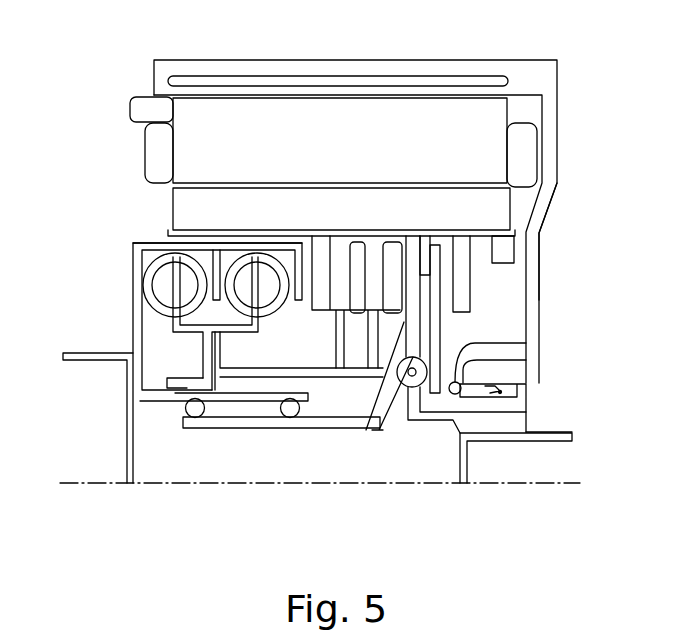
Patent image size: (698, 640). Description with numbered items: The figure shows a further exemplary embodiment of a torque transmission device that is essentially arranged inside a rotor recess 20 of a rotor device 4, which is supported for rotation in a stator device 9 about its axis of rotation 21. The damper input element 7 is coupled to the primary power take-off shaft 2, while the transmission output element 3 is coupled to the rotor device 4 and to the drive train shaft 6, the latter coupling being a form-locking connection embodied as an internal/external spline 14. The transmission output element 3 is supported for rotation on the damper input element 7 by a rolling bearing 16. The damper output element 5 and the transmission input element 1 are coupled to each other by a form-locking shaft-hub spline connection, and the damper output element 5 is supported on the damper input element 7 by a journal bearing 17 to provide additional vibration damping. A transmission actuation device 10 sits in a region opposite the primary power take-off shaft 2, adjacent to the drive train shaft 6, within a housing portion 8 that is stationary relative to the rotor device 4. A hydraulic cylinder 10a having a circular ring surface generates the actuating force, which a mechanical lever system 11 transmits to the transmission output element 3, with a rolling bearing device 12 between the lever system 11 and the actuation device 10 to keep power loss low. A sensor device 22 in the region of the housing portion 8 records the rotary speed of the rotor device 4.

The transmission input element 1 is at (373, 413).
The primary power take-off shaft 2 is at (90, 361).
The transmission output element 3 is at (539, 233).
The rotor device 4 is at (173, 202).
The damper output element 5 is at (322, 378).
The drive train shaft 6 is at (562, 443).
The damper input element 7 is at (142, 243).
The housing portion 8 is at (558, 117).
The stator device 9 is at (486, 108).
The transmission actuation device 10 is at (543, 393).
The hydraulic cylinder 10a is at (541, 383).
The mechanical lever system 11 is at (443, 322).
The rolling bearing device 12 is at (530, 347).
The internal/external spline 14 is at (500, 441).
The rolling bearing 16 is at (290, 418).
The journal bearing 17 is at (175, 390).
The rotor recess 20 is at (121, 279).
The axis of rotation 21 is at (168, 484).
The sensor device 22 is at (516, 252).